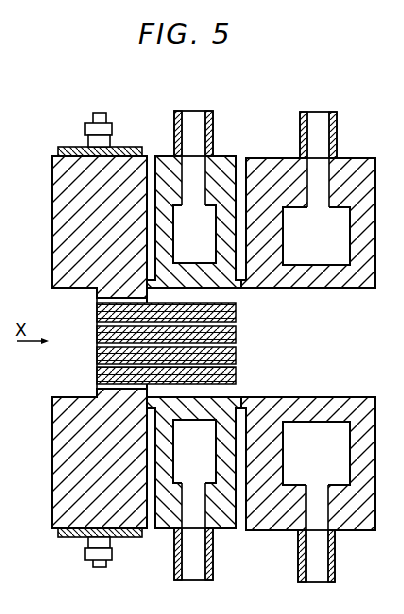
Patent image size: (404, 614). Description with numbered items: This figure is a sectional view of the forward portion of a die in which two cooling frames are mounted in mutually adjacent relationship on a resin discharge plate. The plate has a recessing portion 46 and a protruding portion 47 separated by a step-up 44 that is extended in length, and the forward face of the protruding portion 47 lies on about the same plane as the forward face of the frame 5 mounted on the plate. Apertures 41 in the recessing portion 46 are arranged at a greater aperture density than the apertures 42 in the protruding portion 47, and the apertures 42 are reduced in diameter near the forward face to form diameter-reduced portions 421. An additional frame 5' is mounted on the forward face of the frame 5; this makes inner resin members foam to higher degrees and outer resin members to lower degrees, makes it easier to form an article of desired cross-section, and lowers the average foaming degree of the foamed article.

The frame 5 is at (208, 332).
The additional frame 5' is at (309, 346).
The apertures 41 is at (107, 299).
The apertures 42 is at (163, 345).
The diameter-reduced portions 421 is at (236, 365).
The step-up 44 is at (228, 391).
The recessing portion 46 is at (150, 292).
The protruding portion 47 is at (236, 335).